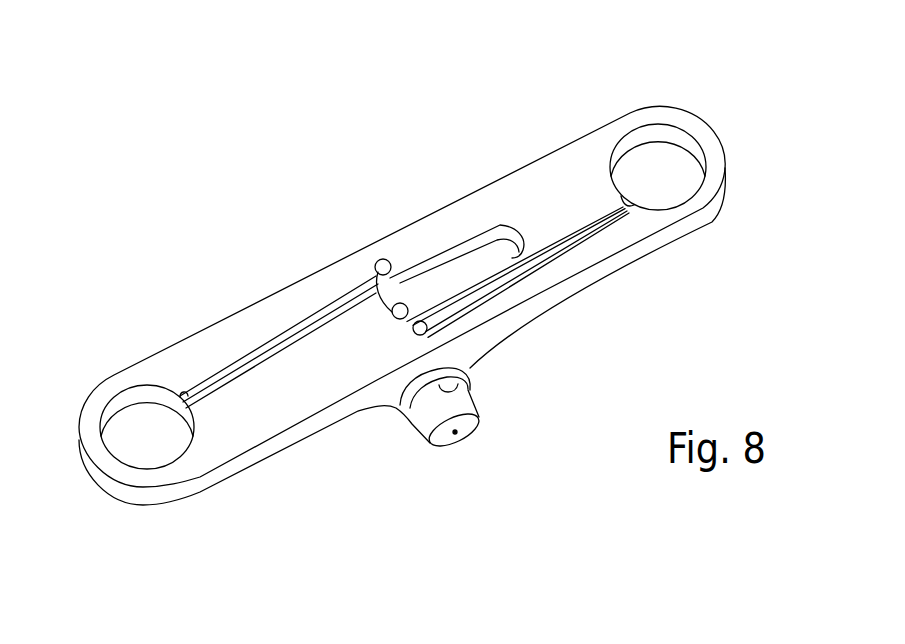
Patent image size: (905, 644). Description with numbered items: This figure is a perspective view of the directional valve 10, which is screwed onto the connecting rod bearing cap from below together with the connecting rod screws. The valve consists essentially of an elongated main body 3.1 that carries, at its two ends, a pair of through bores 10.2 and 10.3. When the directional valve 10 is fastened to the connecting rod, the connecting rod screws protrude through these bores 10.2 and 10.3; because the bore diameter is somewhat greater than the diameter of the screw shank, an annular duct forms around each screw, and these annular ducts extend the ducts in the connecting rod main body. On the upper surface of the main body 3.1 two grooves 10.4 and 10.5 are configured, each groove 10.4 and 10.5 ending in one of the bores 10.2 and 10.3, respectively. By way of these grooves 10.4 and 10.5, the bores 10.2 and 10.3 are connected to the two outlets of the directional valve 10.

The directional valve 10 is at (392, 138).
The main body 3.1 is at (277, 416).
The through bore 10.2 is at (137, 466).
The through bore 10.3 is at (690, 152).
The groove 10.4 is at (257, 357).
The groove 10.5 is at (593, 240).